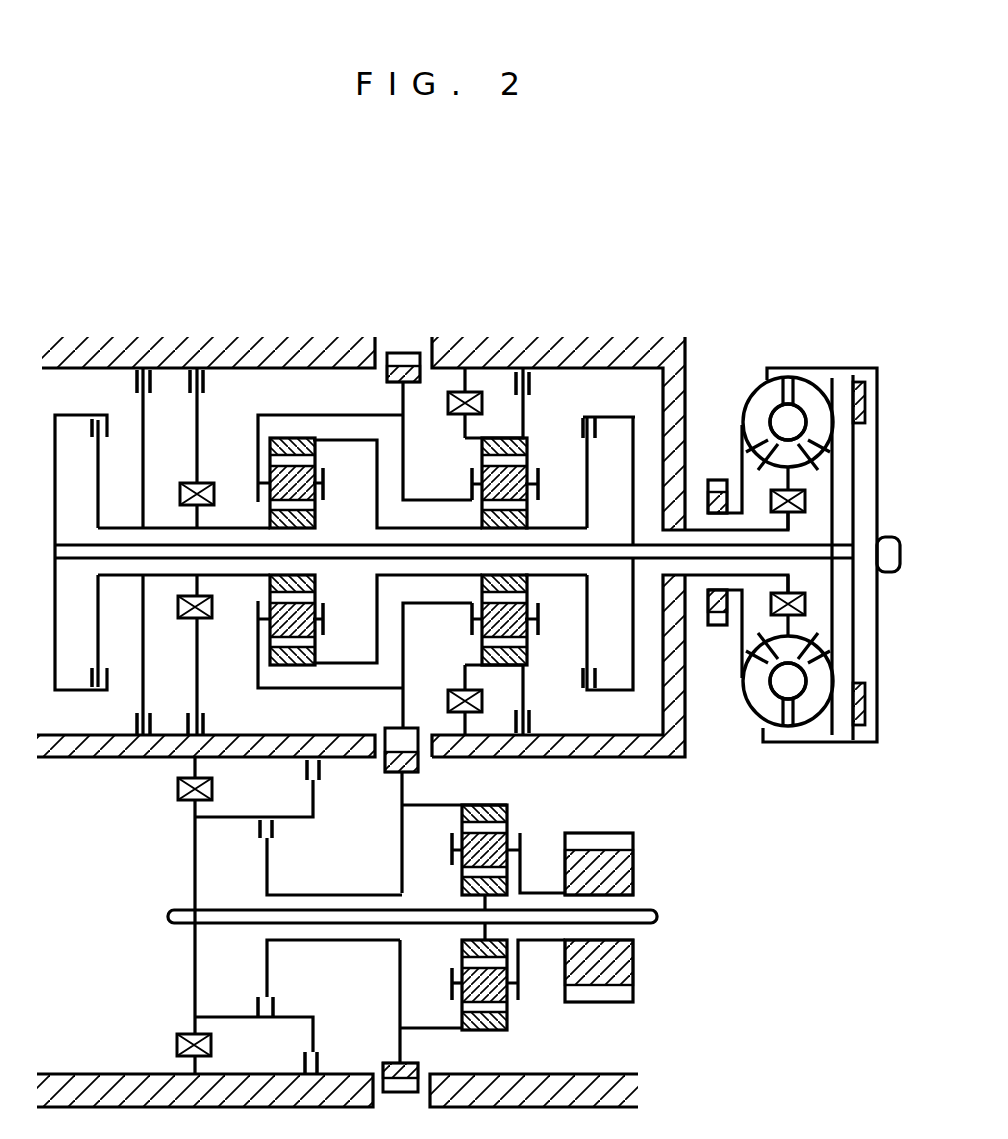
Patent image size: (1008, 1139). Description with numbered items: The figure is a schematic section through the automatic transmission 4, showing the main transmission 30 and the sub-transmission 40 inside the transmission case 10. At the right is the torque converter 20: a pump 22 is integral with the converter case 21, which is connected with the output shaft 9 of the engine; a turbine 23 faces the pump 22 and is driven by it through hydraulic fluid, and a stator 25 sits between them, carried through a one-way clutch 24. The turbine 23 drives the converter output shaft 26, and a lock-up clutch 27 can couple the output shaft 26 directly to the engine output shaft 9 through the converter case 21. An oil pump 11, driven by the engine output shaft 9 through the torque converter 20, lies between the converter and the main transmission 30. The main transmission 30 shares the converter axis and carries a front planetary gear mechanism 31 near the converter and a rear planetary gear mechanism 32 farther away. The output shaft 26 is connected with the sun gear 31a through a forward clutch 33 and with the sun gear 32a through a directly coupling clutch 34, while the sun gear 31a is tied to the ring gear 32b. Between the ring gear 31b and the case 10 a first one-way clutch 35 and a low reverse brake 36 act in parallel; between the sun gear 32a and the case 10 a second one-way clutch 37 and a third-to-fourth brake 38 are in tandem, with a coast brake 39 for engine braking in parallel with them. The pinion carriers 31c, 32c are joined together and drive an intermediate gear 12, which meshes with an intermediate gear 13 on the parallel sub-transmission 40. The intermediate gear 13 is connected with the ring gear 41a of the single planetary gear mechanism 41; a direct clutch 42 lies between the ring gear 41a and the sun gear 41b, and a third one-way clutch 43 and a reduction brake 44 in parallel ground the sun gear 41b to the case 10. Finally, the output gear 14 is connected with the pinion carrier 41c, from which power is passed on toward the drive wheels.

The automatic transmission 4 is at (829, 278).
The engine output shaft 9 is at (887, 522).
The transmission case 10 is at (688, 737).
The oil pump 11 is at (728, 628).
The intermediate gear 12 is at (383, 730).
The intermediate gear 13 is at (386, 772).
The output gear 14 is at (633, 850).
The torque converter 20 is at (763, 345).
The converter case 21 is at (795, 366).
The pump 22 is at (760, 375).
The turbine 23 is at (838, 375).
The one-way clutch 24 is at (770, 490).
The stator 25 is at (772, 398).
The converter output shaft 26 is at (708, 560).
The lock-up clutch 27 is at (858, 380).
The main transmission 30 is at (46, 396).
The front planetary gear mechanism 31 is at (535, 428).
The sun gear 31a is at (532, 590).
The ring gear 31b is at (530, 452).
The pinion carrier 31c is at (468, 497).
The rear planetary gear mechanism 32 is at (286, 430).
The sun gear 32a is at (318, 517).
The ring gear 32b is at (318, 440).
The pinion carrier 32c is at (256, 445).
The forward clutch 33 is at (612, 417).
The directly coupling clutch 34 is at (88, 430).
The first one-way clutch 35 is at (455, 390).
The low reverse brake 36 is at (513, 383).
The second one-way clutch 37 is at (182, 487).
The 3-4 brake 38 is at (172, 367).
The coast brake 39 is at (127, 367).
The sub-transmission 40 is at (172, 855).
The planetary gear mechanism 41 is at (512, 800).
The ring gear 41a is at (462, 815).
The sun gear 41b is at (462, 948).
The pinion carrier 41c is at (522, 843).
The direct clutch 42 is at (258, 828).
The third one-way clutch 43 is at (177, 790).
The reduction brake 44 is at (305, 772).